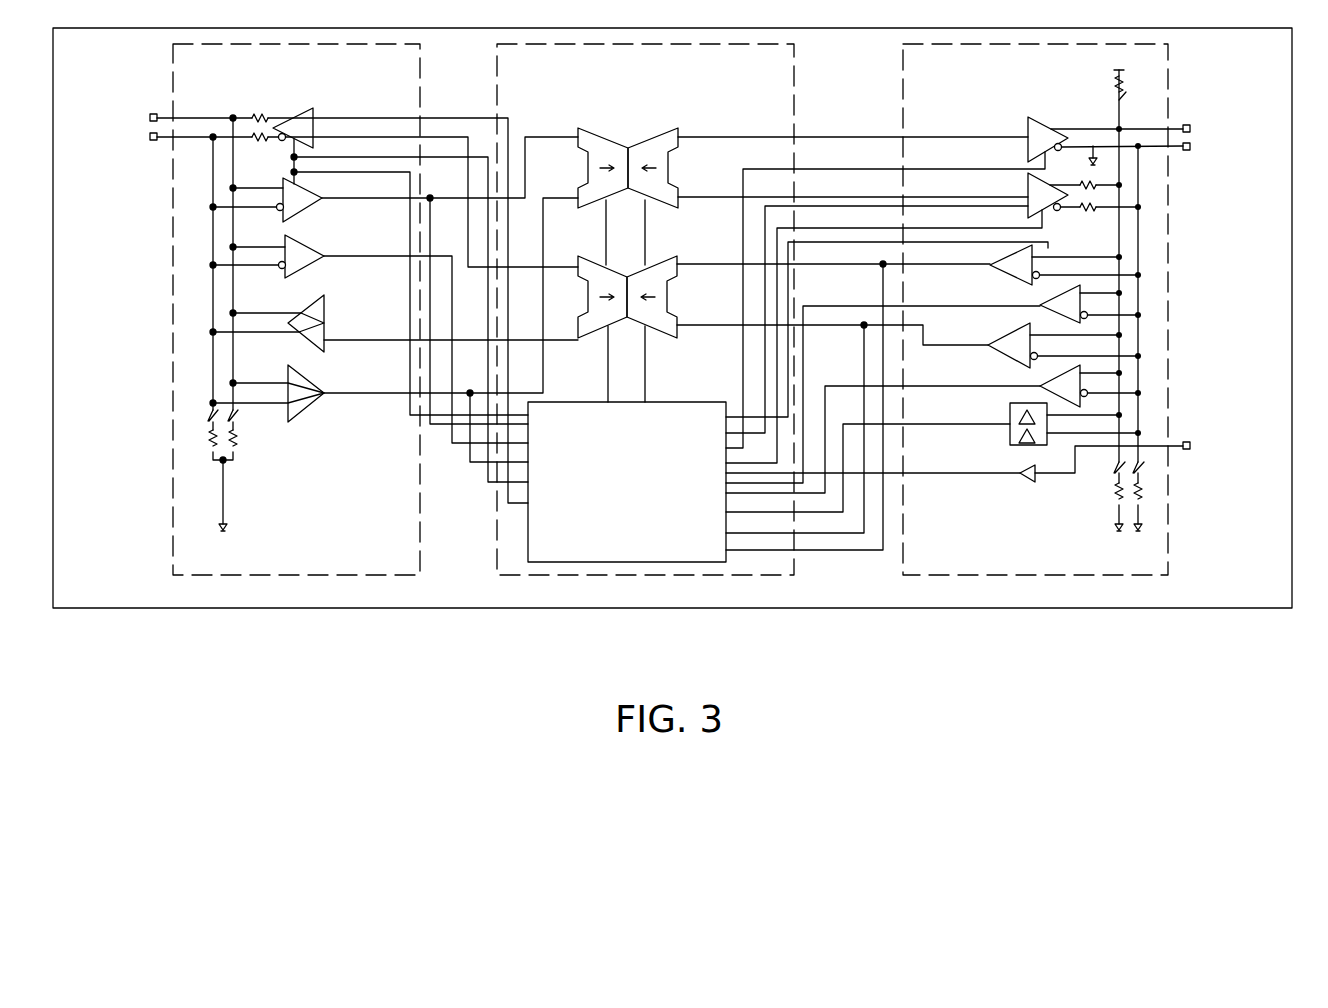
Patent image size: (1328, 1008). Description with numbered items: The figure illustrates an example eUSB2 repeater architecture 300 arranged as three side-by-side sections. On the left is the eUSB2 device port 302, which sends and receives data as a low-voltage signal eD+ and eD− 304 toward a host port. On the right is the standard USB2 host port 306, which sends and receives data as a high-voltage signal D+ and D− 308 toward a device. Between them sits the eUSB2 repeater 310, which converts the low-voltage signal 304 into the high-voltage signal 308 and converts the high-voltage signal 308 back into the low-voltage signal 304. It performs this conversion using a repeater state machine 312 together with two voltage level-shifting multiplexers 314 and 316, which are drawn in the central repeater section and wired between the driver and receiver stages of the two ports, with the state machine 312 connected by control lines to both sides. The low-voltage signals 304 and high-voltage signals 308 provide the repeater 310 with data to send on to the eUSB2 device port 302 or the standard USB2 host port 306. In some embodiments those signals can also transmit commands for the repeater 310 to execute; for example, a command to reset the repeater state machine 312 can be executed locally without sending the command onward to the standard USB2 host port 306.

The repeater system 300 is at (687, 689).
The eUSB2 device port 302 is at (420, 80).
The low-voltage signal eD+ and eD− 304 is at (127, 92).
The standard USB2 host port 306 is at (903, 106).
The high voltage signal D+ and D− 308 is at (1205, 107).
The eUSB2 repeater 310 is at (800, 88).
The repeater state machine 312 is at (670, 402).
The voltage level-shifting multiplexer 314 is at (627, 277).
The voltage level-shifting multiplexer 316 is at (627, 147).